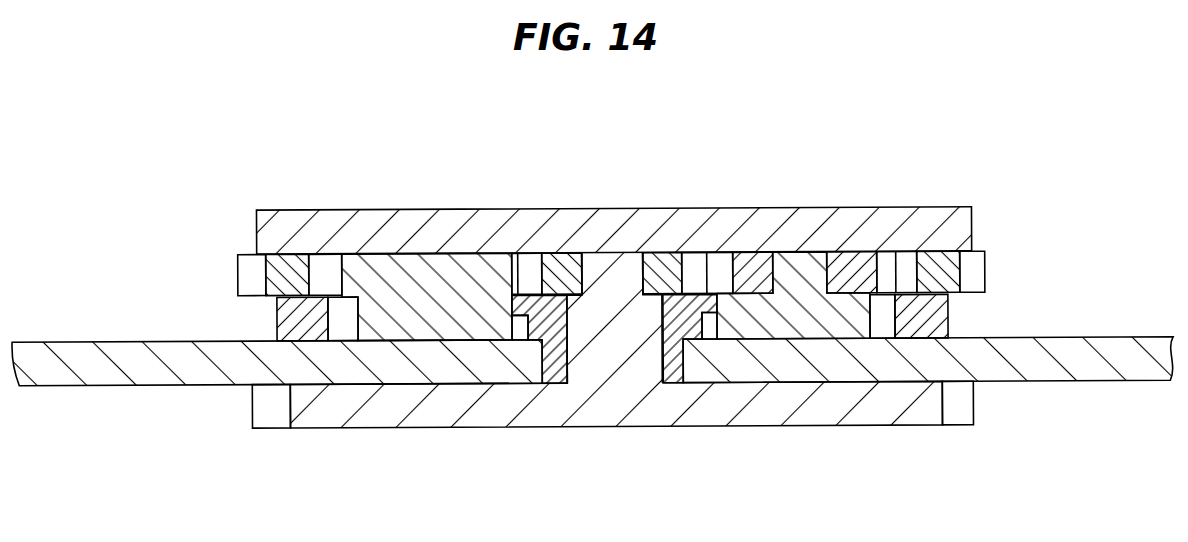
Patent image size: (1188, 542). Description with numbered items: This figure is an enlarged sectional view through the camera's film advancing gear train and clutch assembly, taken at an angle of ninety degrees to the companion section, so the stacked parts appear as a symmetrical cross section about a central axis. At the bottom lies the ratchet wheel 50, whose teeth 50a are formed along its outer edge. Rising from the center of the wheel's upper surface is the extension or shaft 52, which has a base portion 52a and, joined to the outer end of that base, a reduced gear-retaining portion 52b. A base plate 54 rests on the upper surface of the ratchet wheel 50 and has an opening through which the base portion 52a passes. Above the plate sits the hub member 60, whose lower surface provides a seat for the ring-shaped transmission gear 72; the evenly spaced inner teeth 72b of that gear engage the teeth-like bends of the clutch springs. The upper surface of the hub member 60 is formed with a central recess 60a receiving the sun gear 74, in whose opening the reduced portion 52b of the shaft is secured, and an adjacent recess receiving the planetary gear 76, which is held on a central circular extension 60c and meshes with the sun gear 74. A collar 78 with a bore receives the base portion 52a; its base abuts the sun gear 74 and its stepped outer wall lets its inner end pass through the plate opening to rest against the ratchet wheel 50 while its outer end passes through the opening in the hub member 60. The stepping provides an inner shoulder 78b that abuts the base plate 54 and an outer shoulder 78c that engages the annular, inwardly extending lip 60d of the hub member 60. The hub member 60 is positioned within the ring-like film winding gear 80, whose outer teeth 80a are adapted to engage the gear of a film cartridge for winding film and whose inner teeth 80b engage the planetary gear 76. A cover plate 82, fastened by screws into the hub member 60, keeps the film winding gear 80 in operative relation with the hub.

The ratchet wheel 50 is at (878, 417).
The teeth 50a is at (252, 408).
The extension or shaft 52 is at (645, 375).
The base portion 52a is at (570, 353).
The reduced gear-retaining portion 52b is at (628, 262).
The base plate 54 is at (1133, 334).
The hub member 60 is at (418, 265).
The central recess 60a is at (516, 258).
The central circular extension 60c is at (818, 260).
The annular inwardly extending lip 60d is at (708, 331).
The ring-shaped transmission gear 72 is at (277, 314).
The inner teeth 72b is at (343, 333).
The sun gear 74 is at (568, 256).
The planetary gear 76 is at (766, 262).
The collar 78 is at (677, 380).
The inner shoulder 78b is at (538, 340).
The outer shoulder 78c is at (511, 339).
The ring-like film winding gear 80 is at (952, 292).
The outer teeth 80a is at (238, 267).
The inner teeth 80b is at (328, 262).
The cover plate 82 is at (312, 208).